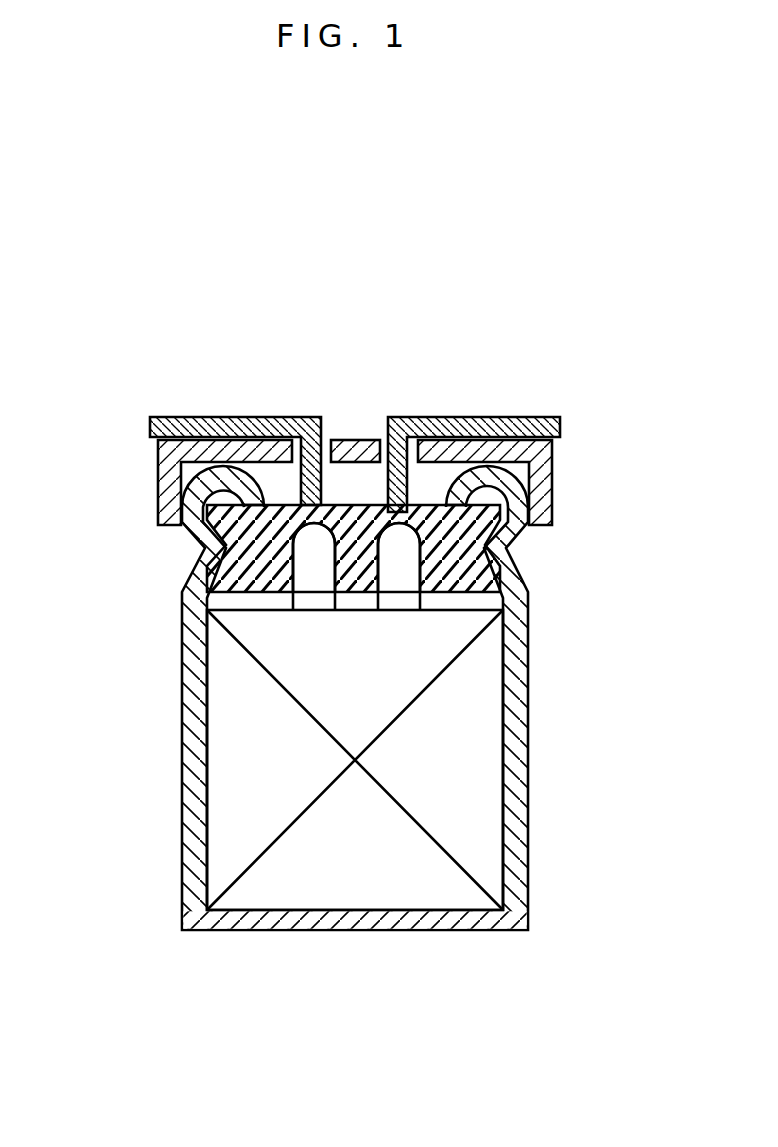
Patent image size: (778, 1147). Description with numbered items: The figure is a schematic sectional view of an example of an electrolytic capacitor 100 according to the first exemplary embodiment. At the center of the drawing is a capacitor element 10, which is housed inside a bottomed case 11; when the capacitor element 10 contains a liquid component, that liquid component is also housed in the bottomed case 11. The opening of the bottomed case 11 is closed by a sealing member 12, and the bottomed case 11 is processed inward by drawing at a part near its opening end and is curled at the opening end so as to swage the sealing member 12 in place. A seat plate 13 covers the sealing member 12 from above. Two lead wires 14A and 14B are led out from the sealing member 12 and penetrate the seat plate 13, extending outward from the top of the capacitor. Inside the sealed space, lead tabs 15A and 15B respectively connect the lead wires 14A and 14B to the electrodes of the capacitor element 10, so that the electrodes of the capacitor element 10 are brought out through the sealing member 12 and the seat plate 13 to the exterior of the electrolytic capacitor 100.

The electrolytic capacitor 100 is at (110, 347).
The capacitor element 10 is at (247, 738).
The bottomed case 11 is at (528, 704).
The sealing member 12 is at (457, 550).
The seat plate 13 is at (351, 440).
The lead wire 14A is at (232, 417).
The lead wire 14B is at (484, 417).
The lead tab 15A is at (310, 557).
The lead tab 15B is at (395, 577).